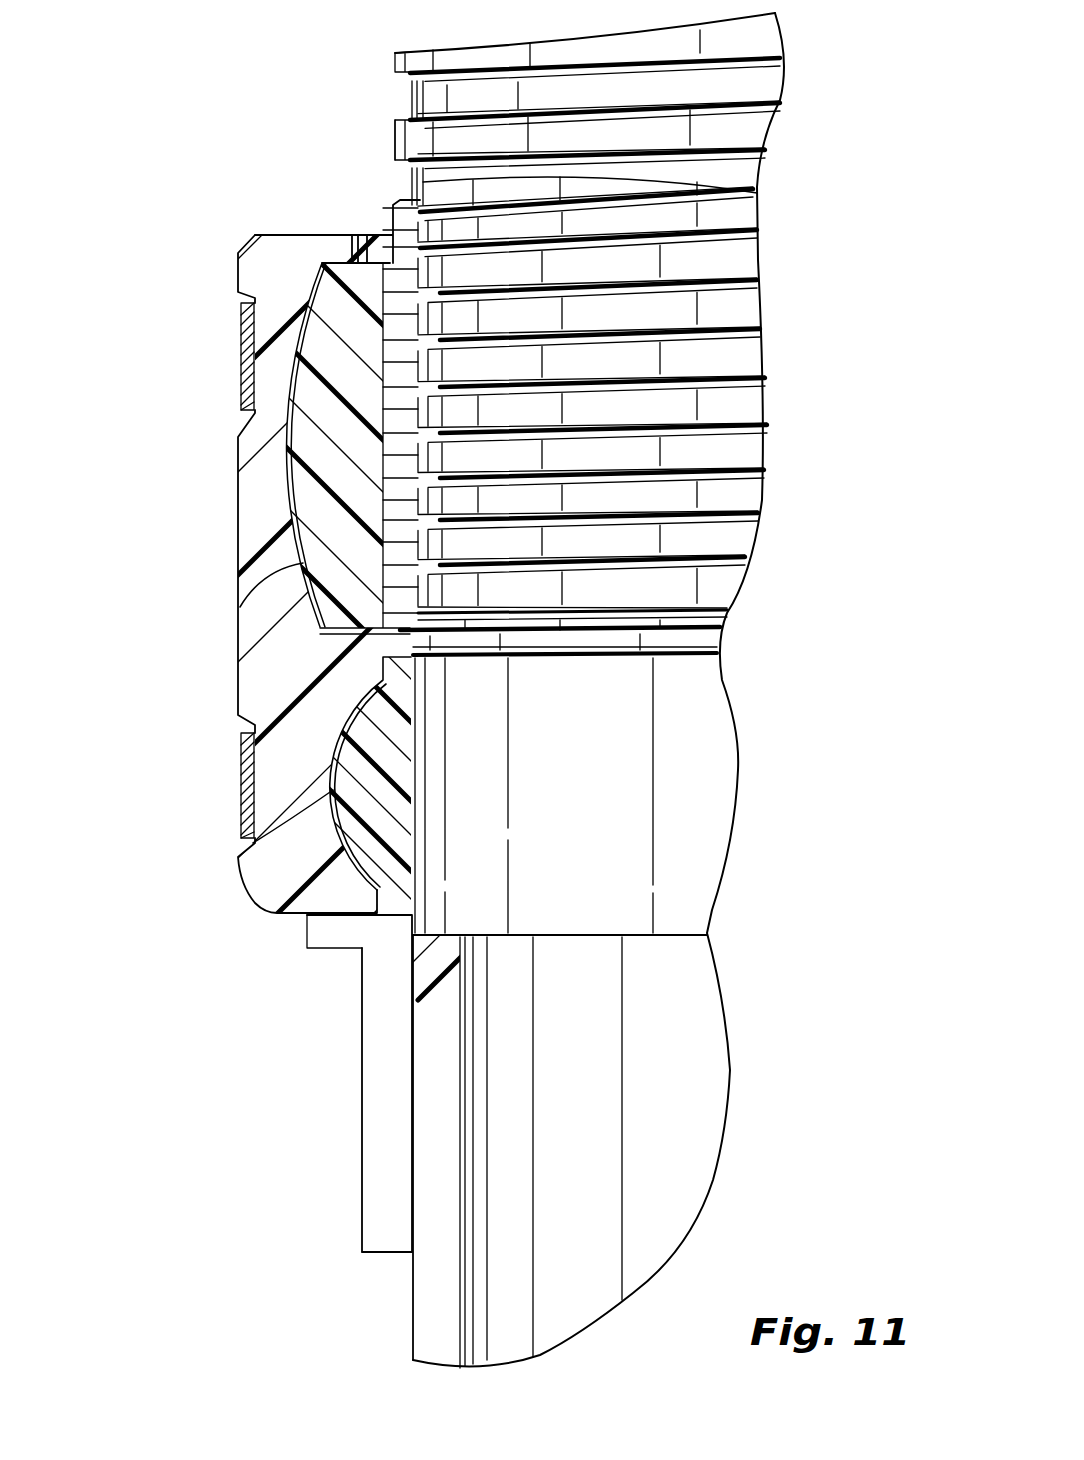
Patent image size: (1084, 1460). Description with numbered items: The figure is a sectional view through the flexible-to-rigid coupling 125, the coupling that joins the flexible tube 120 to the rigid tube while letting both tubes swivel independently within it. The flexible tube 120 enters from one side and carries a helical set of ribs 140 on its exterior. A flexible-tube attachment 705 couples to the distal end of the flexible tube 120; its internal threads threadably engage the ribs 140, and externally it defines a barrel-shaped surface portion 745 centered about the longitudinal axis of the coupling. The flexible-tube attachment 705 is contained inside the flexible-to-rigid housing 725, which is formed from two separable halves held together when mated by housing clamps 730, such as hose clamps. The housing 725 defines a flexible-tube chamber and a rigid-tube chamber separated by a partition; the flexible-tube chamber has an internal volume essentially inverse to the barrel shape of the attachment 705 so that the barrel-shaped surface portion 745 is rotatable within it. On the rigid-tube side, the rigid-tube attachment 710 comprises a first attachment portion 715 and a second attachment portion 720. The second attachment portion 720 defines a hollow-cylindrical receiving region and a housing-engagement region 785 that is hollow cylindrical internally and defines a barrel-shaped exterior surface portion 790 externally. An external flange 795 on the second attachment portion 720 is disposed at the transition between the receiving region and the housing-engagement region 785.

The flexible tube 120 is at (368, 110).
The flexible-to-rigid coupling 125 is at (143, 232).
The ribs 140 is at (396, 138).
The flexible-tube attachment 705 is at (360, 430).
The rigid-tube attachment 710 is at (297, 1268).
The first attachment portion 715 is at (413, 1303).
The second attachment portion 720 is at (364, 1102).
The flexible-to-rigid housing 725 is at (240, 512).
The housing clamps 730 is at (243, 352).
The barrel-shaped surface portion 745 is at (300, 565).
The housing-engagement region 785 is at (377, 792).
The barrel-shaped exterior surface portion 790 is at (241, 852).
The external flange 795 is at (313, 950).